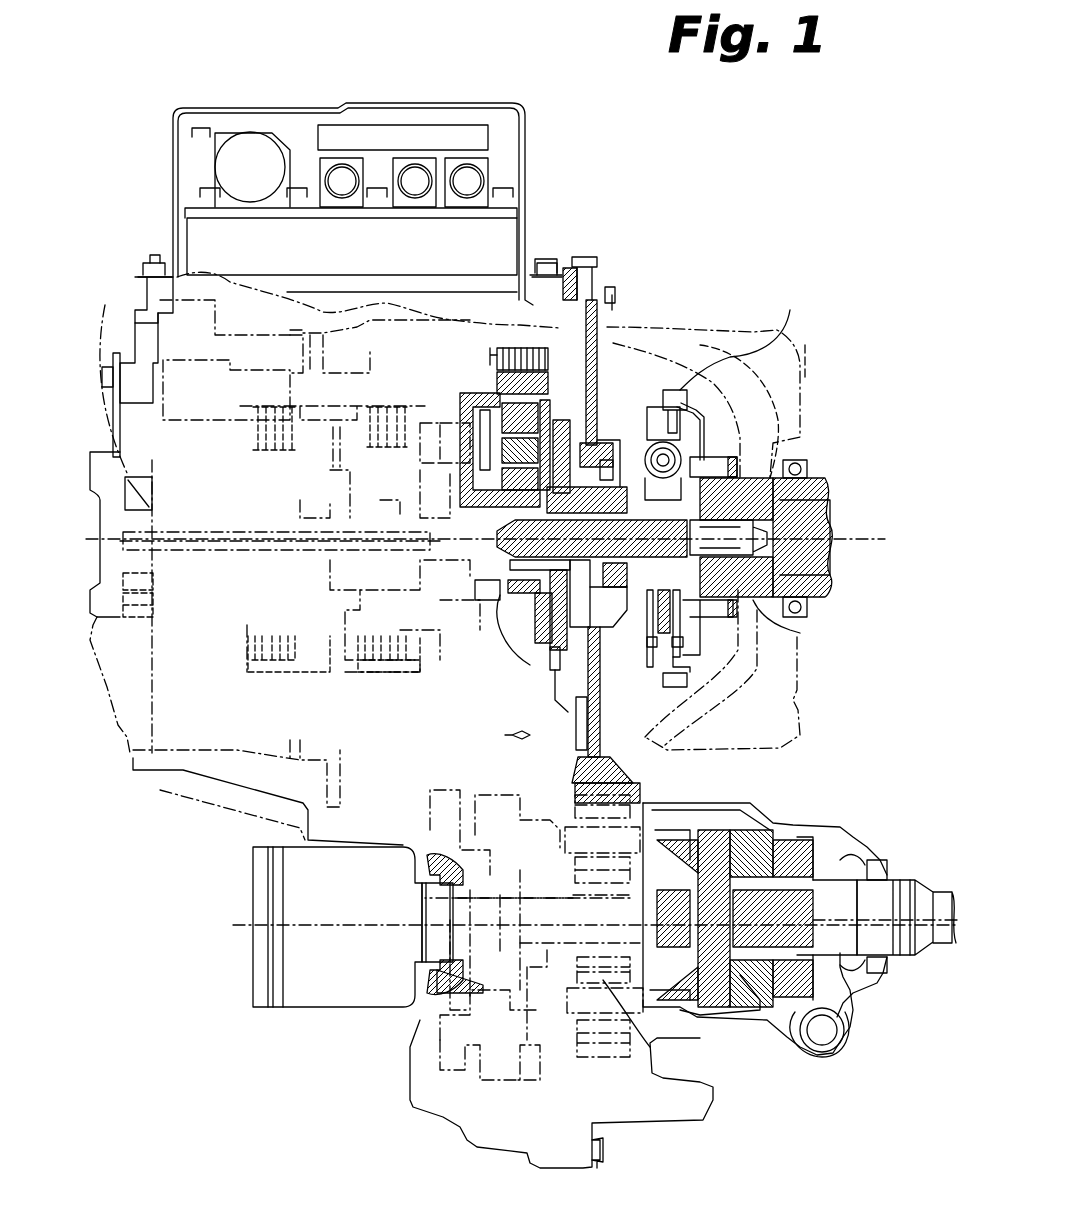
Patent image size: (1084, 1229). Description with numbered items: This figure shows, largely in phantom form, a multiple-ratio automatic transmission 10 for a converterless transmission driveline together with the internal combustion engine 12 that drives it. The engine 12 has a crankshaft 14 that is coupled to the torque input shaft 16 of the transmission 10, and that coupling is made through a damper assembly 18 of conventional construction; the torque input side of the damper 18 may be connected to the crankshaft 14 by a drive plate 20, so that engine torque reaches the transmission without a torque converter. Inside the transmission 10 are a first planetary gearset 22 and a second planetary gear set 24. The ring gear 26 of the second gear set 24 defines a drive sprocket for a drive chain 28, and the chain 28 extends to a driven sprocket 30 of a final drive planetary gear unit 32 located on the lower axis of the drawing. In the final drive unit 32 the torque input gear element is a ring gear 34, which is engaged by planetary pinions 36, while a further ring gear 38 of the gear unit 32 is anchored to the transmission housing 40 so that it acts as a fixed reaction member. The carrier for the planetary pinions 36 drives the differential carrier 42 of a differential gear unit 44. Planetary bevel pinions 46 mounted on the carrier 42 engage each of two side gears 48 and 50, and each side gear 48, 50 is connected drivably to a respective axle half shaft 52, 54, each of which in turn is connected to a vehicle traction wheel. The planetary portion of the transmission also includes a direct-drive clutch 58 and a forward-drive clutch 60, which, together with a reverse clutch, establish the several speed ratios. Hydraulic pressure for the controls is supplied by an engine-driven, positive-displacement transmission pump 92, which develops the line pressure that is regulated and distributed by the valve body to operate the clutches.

The multiple-ratio automatic transmission 10 is at (533, 252).
The internal combustion engine 12 is at (795, 384).
The crankshaft 14 is at (760, 613).
The torque input shaft 16 is at (517, 557).
The damper assembly 18 is at (745, 382).
The drive plate 20 is at (710, 433).
The first planetary gearset 22 is at (447, 432).
The second planetary gear set 24 is at (545, 423).
The ring gear 26 is at (528, 355).
The drive chain 28 is at (598, 302).
The driven sprocket 30 is at (505, 734).
The final drive planetary gear unit 32 is at (642, 818).
The ring gear 34 is at (702, 825).
The planetary pinions 36 is at (655, 1045).
The ring gear 38 is at (618, 762).
The transmission housing 40 is at (584, 715).
The differential carrier 42 is at (740, 840).
The differential gear unit 44 is at (795, 990).
The planetary bevel pinions 46 is at (778, 840).
The side gear 48 is at (868, 968).
The side gear 50 is at (735, 985).
The axle half shaft 52 is at (842, 907).
The axle half shaft 54 is at (450, 985).
The direct-drive clutch 58 is at (262, 452).
The forward-drive clutch 60 is at (365, 432).
The transmission pump 92 is at (325, 558).